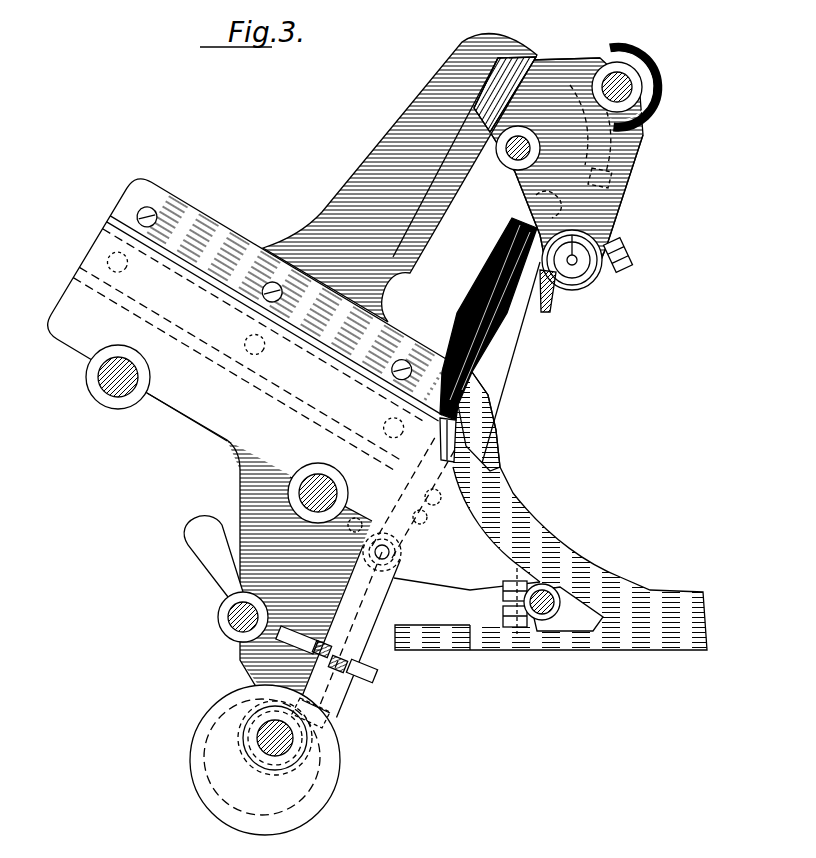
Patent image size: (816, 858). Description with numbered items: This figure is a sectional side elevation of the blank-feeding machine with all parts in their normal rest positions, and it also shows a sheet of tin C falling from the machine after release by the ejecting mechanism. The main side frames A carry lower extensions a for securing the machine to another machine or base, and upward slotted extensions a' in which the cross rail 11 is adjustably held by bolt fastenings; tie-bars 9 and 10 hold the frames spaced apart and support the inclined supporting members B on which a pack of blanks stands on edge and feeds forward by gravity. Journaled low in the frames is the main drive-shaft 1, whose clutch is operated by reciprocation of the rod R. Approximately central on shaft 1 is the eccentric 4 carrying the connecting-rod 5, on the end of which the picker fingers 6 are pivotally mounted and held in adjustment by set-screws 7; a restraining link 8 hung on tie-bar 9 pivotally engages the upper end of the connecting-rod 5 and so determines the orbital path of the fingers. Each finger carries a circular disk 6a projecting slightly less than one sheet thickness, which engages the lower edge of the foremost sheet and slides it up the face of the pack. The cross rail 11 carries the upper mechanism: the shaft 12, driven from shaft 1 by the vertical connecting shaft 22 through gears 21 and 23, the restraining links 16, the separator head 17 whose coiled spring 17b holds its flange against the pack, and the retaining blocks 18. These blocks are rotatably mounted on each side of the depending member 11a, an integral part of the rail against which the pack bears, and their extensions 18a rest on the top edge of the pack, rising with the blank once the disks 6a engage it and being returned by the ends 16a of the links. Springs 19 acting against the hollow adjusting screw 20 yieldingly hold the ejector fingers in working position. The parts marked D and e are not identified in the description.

The main drive-shaft 1 is at (268, 738).
The eccentric 4 is at (265, 760).
The connecting-rod 5 is at (304, 663).
The picker fingers 6 is at (379, 576).
The circular disk 6a is at (430, 497).
The set-screws 7 is at (360, 677).
The restraining link 8 is at (355, 526).
The tie-bar 9 is at (332, 497).
The tie-bar 10 is at (128, 378).
The cross rail 11 is at (548, 64).
The depending member 11a is at (567, 282).
The shaft 12 is at (637, 81).
The restraining links 16 is at (518, 171).
The ends of the links 16a is at (545, 216).
The separator head 17 is at (497, 94).
The coiled spring 17b is at (598, 268).
The retaining blocks 18 is at (587, 270).
The extensions 18a is at (530, 233).
The springs 19 is at (614, 166).
The hollow adjusting screw 20 is at (612, 175).
The gear 21 is at (322, 720).
The vertical connecting shaft 22 is at (255, 351).
The gear 23 is at (667, 100).
The extensions a is at (583, 621).
The upward slotted extensions a' is at (400, 178).
The main side frames A is at (551, 511).
The supporting members B is at (343, 547).
The sheet of tin C is at (503, 360).
The guide D is at (452, 450).
The rod R is at (227, 617).
The bracket end e is at (412, 446).